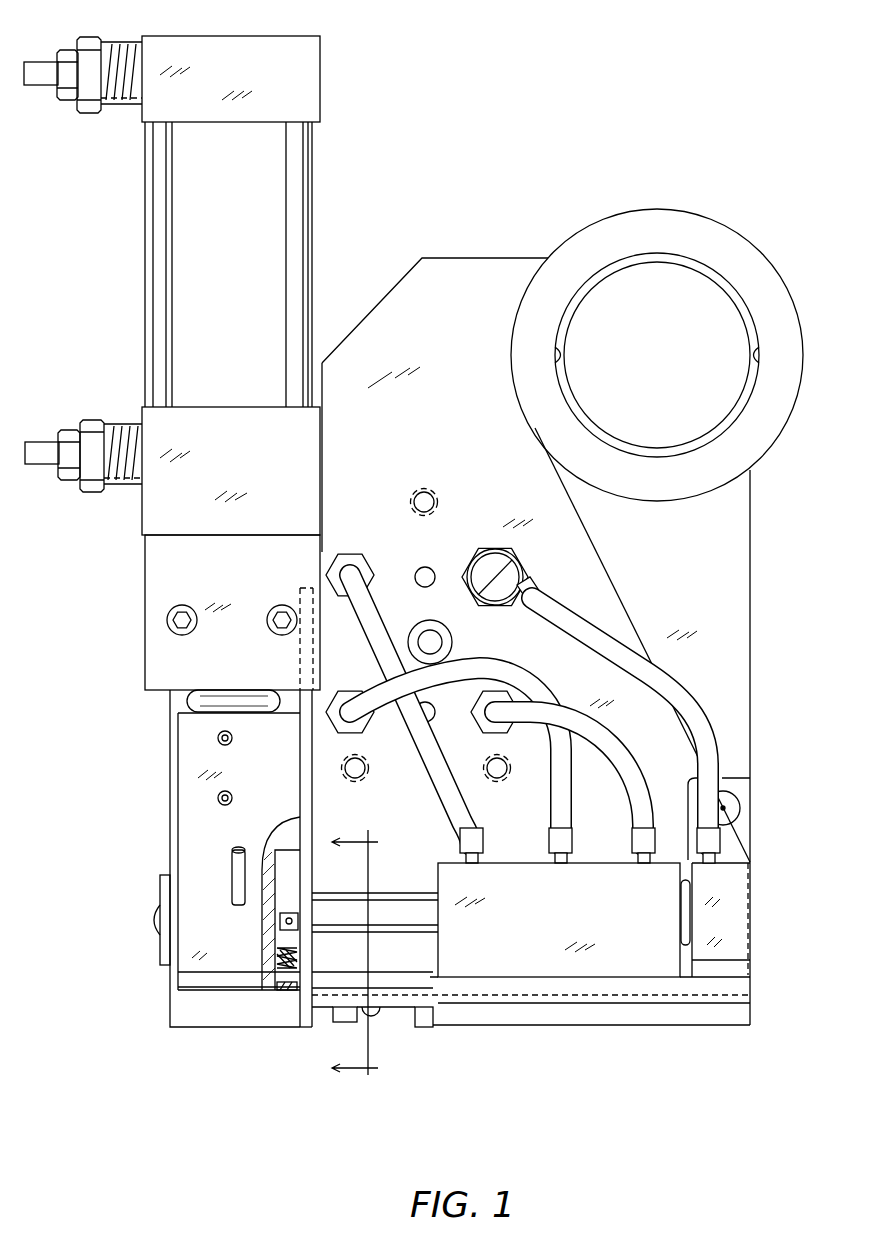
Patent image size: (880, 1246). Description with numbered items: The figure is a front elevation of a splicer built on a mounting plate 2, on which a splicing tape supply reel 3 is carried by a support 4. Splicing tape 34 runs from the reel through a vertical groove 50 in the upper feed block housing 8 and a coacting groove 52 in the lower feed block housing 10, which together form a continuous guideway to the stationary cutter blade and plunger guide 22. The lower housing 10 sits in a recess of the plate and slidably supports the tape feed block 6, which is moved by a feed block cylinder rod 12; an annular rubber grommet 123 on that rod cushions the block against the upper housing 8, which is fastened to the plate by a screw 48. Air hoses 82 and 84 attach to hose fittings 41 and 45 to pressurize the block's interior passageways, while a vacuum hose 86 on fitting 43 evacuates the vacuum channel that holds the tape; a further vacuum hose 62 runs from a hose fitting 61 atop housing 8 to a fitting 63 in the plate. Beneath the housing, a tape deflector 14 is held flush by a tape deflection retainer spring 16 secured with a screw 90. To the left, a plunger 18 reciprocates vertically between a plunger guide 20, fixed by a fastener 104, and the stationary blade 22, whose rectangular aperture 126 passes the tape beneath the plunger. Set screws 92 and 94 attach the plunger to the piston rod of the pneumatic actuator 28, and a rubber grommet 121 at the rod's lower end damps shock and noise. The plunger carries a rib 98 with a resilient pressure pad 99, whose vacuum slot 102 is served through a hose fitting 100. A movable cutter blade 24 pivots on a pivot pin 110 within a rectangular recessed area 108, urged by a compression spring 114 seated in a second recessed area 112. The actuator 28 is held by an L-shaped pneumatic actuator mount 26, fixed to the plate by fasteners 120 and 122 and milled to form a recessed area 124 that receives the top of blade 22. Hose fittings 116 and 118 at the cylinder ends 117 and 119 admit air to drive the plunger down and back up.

The mounting plate 2 is at (378, 311).
The splicing tape supply reel 3 is at (710, 226).
The support 4 is at (657, 276).
The tape feed block 6 is at (551, 930).
The upper feed block housing 8 is at (724, 928).
The lower feed block housing 10 is at (513, 990).
The feed block cylinder rod 12 is at (404, 906).
The tape deflector 14 is at (436, 1022).
The tape deflection retainer spring 16 is at (341, 1018).
The plunger 18 is at (186, 804).
The plunger guide 20 is at (165, 889).
The stationary cutter blade and plunger guide 22 is at (314, 604).
The movable cutter blade 24 is at (300, 879).
The pneumatic actuator mount 26 is at (242, 568).
The pneumatic actuator 28 is at (240, 224).
The splicing tape 34 is at (594, 550).
The hose fitting 41 is at (460, 852).
The hose fitting 43 is at (549, 852).
The hose fitting 45 is at (632, 852).
The screw 48 is at (741, 821).
The vertical groove 50 is at (752, 911).
The groove 52 is at (756, 993).
The hose fitting 61 is at (697, 852).
The vacuum hose 62 is at (666, 668).
The fitting 63 is at (494, 556).
The air hose 82 is at (447, 735).
The air hose 84 is at (600, 741).
The vacuum hose 86 is at (516, 672).
The screw 90 is at (373, 1016).
The set screw 92 is at (219, 737).
The set screw 94 is at (228, 792).
The rib 98 is at (186, 975).
The resilient pressure pad 99 is at (186, 988).
The hose fitting 100 is at (236, 866).
The vacuum slot 102 is at (291, 992).
The fastener 104 is at (158, 923).
The rectangular recessed area 108 is at (288, 857).
The pivot pin 110 is at (280, 921).
The second recessed area 112 is at (298, 958).
The compression spring 114 is at (276, 961).
The hose fitting 116 is at (44, 84).
The end of actuator cylinder 117 is at (262, 86).
The hose fitting 118 is at (42, 446).
The end of actuator cylinder 119 is at (260, 476).
The fastener 120 is at (186, 594).
The rubber grommet 121 is at (196, 700).
The fastener 122 is at (288, 594).
The annular rubber grommet 123 is at (681, 916).
The recessed area 124 is at (315, 591).
The rectangular aperture 126 is at (300, 1028).